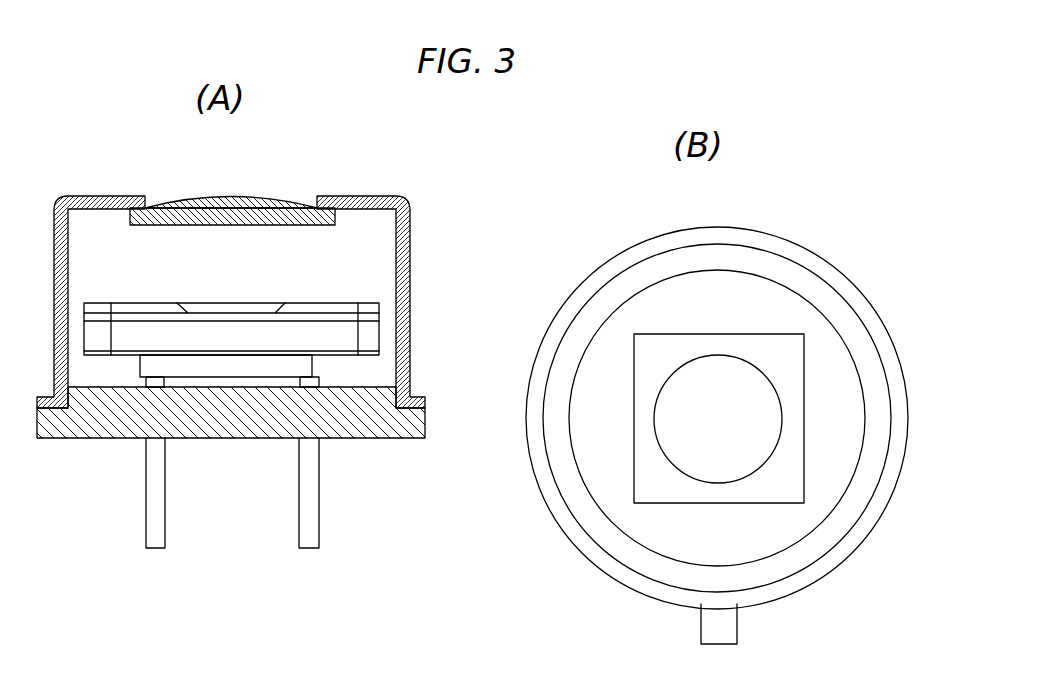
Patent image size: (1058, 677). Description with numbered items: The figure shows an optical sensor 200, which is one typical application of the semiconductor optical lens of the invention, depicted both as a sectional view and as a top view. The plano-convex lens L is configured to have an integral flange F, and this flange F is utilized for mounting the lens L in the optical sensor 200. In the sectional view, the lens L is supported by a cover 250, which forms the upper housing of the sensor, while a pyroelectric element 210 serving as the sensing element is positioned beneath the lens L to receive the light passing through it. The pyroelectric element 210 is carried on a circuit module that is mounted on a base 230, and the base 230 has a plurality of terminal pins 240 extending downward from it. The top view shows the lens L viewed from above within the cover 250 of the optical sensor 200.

The optical sensor 200 is at (403, 200).
The pyroelectric element 210 is at (322, 305).
The base 230 is at (365, 442).
The terminal pins 240 is at (145, 498).
The cover 250 is at (410, 301).
The lens L is at (218, 195).
The flange F is at (315, 207).